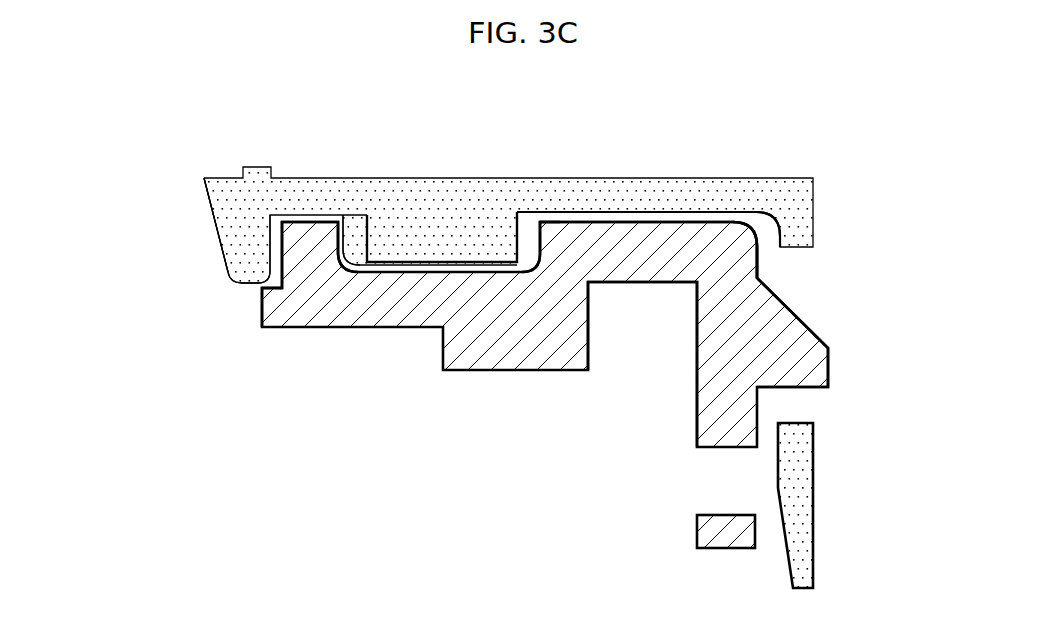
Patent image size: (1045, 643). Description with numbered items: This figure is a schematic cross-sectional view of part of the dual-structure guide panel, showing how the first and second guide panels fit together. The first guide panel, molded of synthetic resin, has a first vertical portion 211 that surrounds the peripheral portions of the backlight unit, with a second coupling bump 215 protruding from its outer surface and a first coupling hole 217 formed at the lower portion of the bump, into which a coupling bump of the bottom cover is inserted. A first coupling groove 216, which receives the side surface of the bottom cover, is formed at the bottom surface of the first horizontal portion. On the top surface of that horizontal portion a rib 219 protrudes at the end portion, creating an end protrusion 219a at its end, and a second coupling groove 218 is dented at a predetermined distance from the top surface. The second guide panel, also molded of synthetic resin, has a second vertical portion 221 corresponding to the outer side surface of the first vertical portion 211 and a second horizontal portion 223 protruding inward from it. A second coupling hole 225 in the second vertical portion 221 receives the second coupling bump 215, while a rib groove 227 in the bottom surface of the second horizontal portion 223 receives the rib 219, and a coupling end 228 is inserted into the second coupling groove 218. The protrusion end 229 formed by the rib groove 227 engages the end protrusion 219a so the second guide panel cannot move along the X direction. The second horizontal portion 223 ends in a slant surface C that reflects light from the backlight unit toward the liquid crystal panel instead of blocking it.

The first vertical portion 211 is at (713, 318).
The second coupling bump 215 is at (685, 238).
The first coupling groove 216 is at (633, 336).
The first coupling hole 217 is at (718, 492).
The second coupling groove 218 is at (540, 216).
The rib 219 is at (322, 235).
The end protrusion 219a is at (256, 293).
The second vertical portion 221 is at (795, 475).
The second horizontal portion 223 is at (652, 192).
The second coupling hole 225 is at (806, 266).
The rib groove 227 is at (352, 218).
The coupling end 228 is at (438, 226).
The protrusion end 229 is at (240, 270).
The slant surface C is at (203, 233).
The X direction X is at (837, 200).